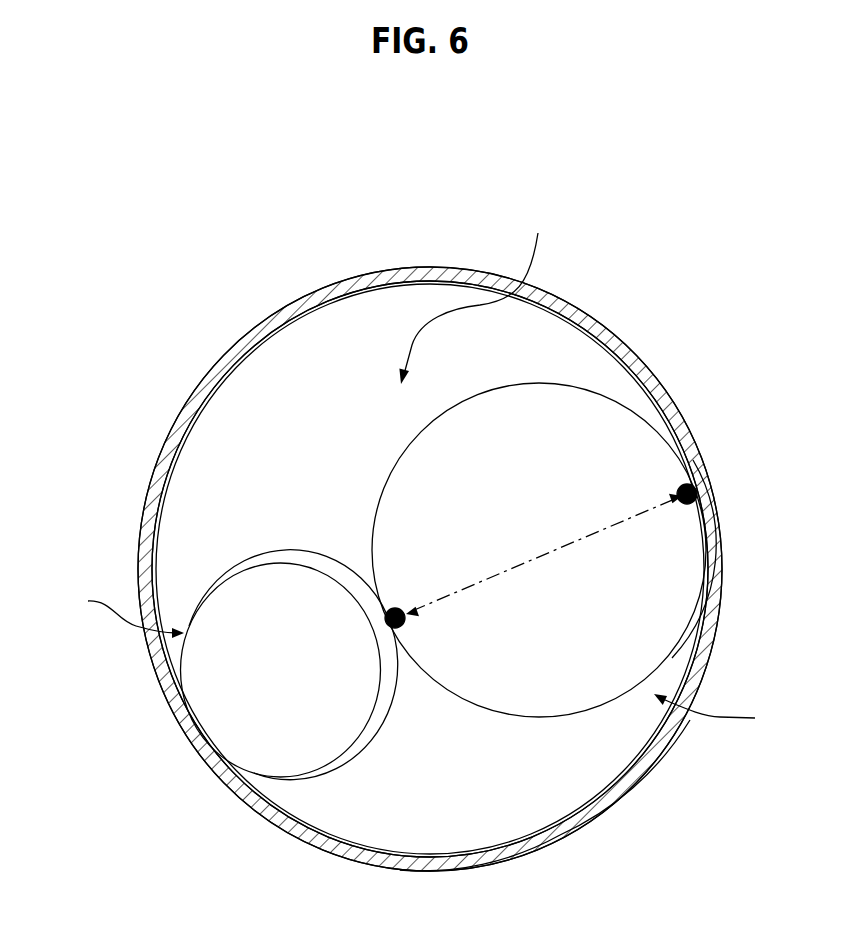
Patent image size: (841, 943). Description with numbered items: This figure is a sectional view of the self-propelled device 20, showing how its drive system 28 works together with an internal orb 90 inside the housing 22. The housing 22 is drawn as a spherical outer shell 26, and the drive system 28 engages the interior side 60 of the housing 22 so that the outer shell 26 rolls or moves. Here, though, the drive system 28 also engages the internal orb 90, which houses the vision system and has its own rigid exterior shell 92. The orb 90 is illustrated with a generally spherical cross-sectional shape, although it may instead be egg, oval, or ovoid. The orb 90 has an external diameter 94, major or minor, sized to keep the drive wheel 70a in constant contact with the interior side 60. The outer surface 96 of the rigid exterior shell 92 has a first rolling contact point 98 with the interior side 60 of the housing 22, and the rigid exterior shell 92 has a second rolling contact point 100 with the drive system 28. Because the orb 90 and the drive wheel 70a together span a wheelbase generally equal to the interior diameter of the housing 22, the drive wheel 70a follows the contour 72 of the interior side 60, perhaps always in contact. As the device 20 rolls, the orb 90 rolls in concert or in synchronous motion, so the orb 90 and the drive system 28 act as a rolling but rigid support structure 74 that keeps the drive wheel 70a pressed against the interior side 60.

The self-propelled device 20 is at (642, 363).
The housing 22 is at (676, 417).
The outer shell 26 is at (630, 780).
The drive system 28 is at (120, 613).
The interior side 60 is at (280, 805).
The drive wheel 70a is at (338, 758).
The contour 72 is at (514, 838).
The rigid support structure 74 is at (475, 295).
The internal orb 90 is at (688, 590).
The rigid exterior shell 92 is at (721, 712).
The external diameter 94 is at (658, 518).
The outer surface 96 is at (539, 550).
The first rolling contact point 98 is at (700, 493).
The second rolling contact point 100 is at (405, 626).